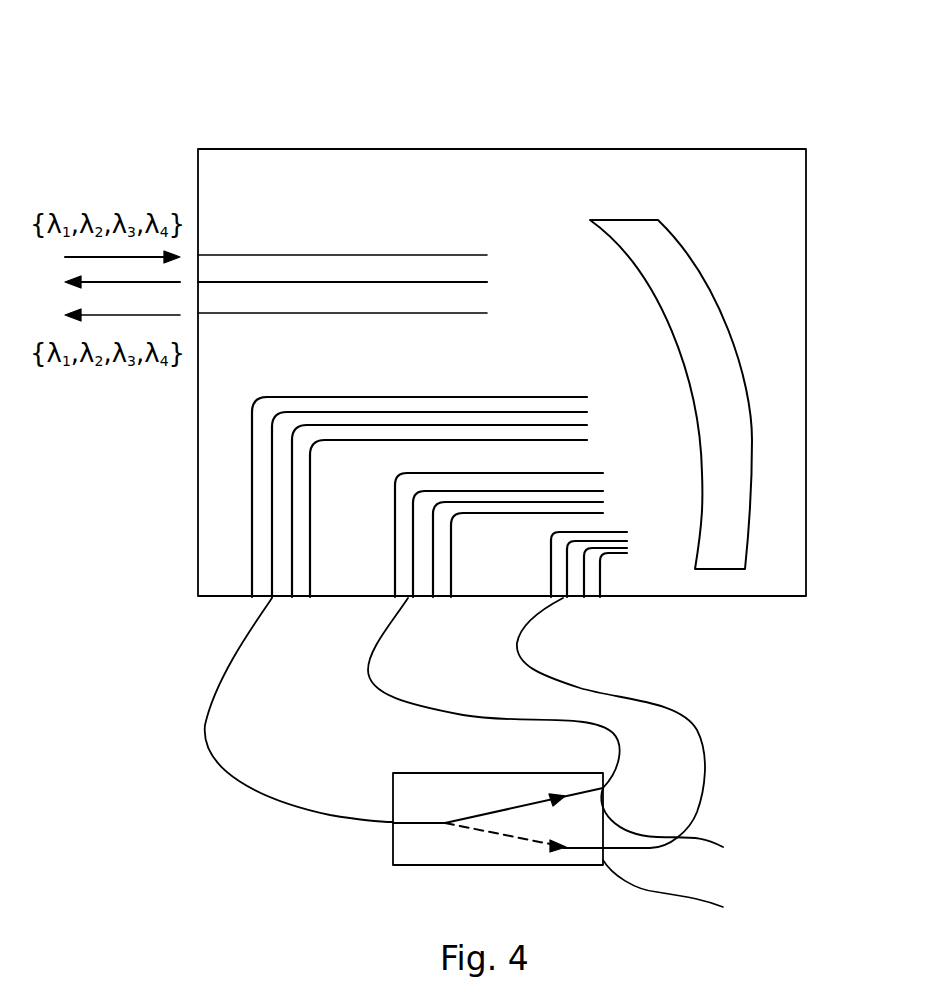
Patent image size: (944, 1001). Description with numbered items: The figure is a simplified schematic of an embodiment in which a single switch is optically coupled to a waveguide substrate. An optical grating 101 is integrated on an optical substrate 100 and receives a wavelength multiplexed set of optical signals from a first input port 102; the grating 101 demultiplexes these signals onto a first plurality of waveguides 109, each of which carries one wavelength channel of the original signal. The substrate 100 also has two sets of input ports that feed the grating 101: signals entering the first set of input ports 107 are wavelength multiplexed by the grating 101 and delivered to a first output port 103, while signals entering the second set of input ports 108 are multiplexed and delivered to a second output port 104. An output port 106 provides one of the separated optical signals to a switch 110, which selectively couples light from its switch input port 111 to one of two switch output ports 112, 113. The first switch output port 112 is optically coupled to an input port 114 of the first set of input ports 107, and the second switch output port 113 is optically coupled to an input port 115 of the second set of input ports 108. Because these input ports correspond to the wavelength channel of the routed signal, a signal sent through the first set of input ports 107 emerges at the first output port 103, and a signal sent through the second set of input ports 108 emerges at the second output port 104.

The optical substrate 100 is at (762, 175).
The optical grating 101 is at (672, 247).
The first input port 102 is at (200, 255).
The first output port 103 is at (200, 282).
The second output port 104 is at (200, 313).
The output port 106 is at (272, 598).
The first set of input ports 107 is at (467, 622).
The second set of input ports 108 is at (617, 619).
The first plurality of waveguides 109 is at (327, 623).
The switch 110 is at (442, 865).
The switch input port 111 is at (392, 835).
The first switch output port 112 is at (723, 847).
The second switch output port 113 is at (723, 907).
The input port 114 is at (408, 598).
The input port 115 is at (567, 598).